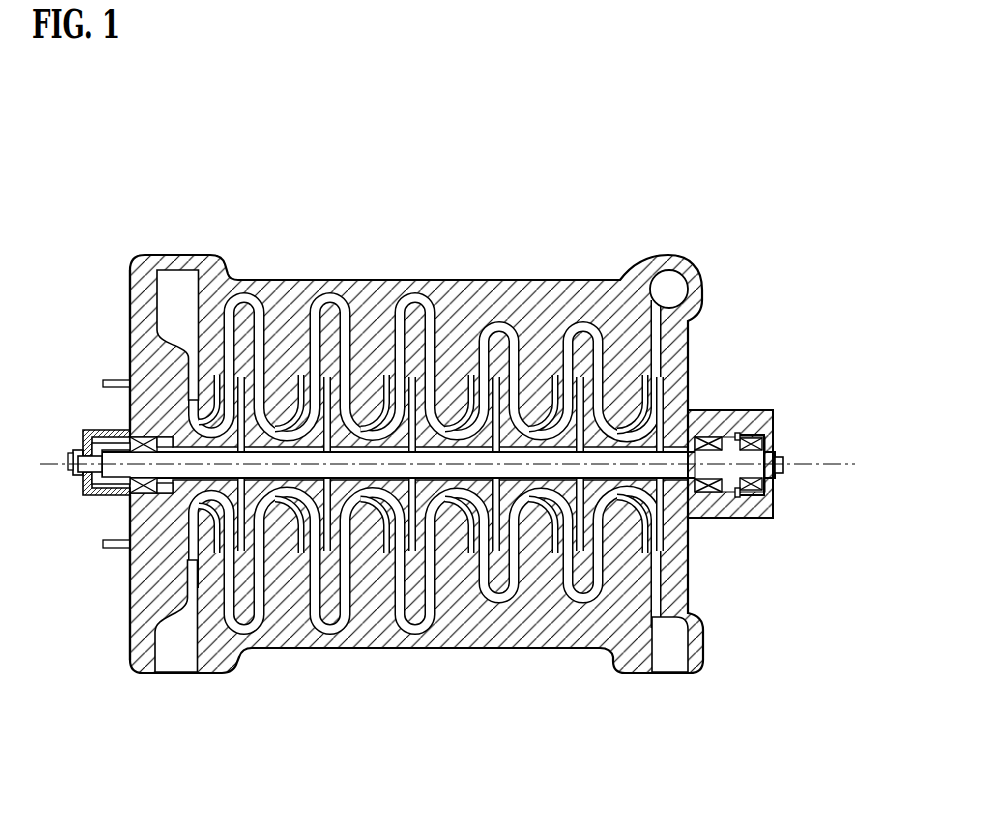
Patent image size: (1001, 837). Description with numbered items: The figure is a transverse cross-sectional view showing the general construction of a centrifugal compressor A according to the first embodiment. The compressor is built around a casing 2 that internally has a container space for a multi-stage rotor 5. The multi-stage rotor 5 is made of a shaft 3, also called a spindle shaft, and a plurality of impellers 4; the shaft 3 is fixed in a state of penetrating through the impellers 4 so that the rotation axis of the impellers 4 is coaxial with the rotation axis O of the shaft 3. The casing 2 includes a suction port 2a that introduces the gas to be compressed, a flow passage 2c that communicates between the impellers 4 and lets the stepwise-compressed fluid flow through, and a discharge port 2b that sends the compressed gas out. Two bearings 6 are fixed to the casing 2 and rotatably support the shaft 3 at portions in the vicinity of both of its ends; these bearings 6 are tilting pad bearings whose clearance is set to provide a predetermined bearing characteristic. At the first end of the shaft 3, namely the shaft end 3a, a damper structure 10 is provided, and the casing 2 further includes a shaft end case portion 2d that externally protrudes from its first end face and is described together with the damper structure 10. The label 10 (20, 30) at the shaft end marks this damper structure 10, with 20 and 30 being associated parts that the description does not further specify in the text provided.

The casing 2 is at (366, 482).
The suction port 2a is at (175, 677).
The discharge port 2b is at (665, 677).
The flow passage 2c is at (340, 651).
The shaft end case portion 2d is at (79, 493).
The shaft 3 is at (425, 394).
The shaft end 3a is at (117, 470).
The impellers 4 is at (409, 374).
The multi-stage rotor 5 is at (473, 180).
The bearings 6 is at (148, 486).
The damper structure 10 is at (70, 409).
The cover member 20 is at (70, 409).
The sensor 30 is at (88, 422).
The centrifugal compressor A is at (744, 187).
The rotation axis O is at (812, 463).